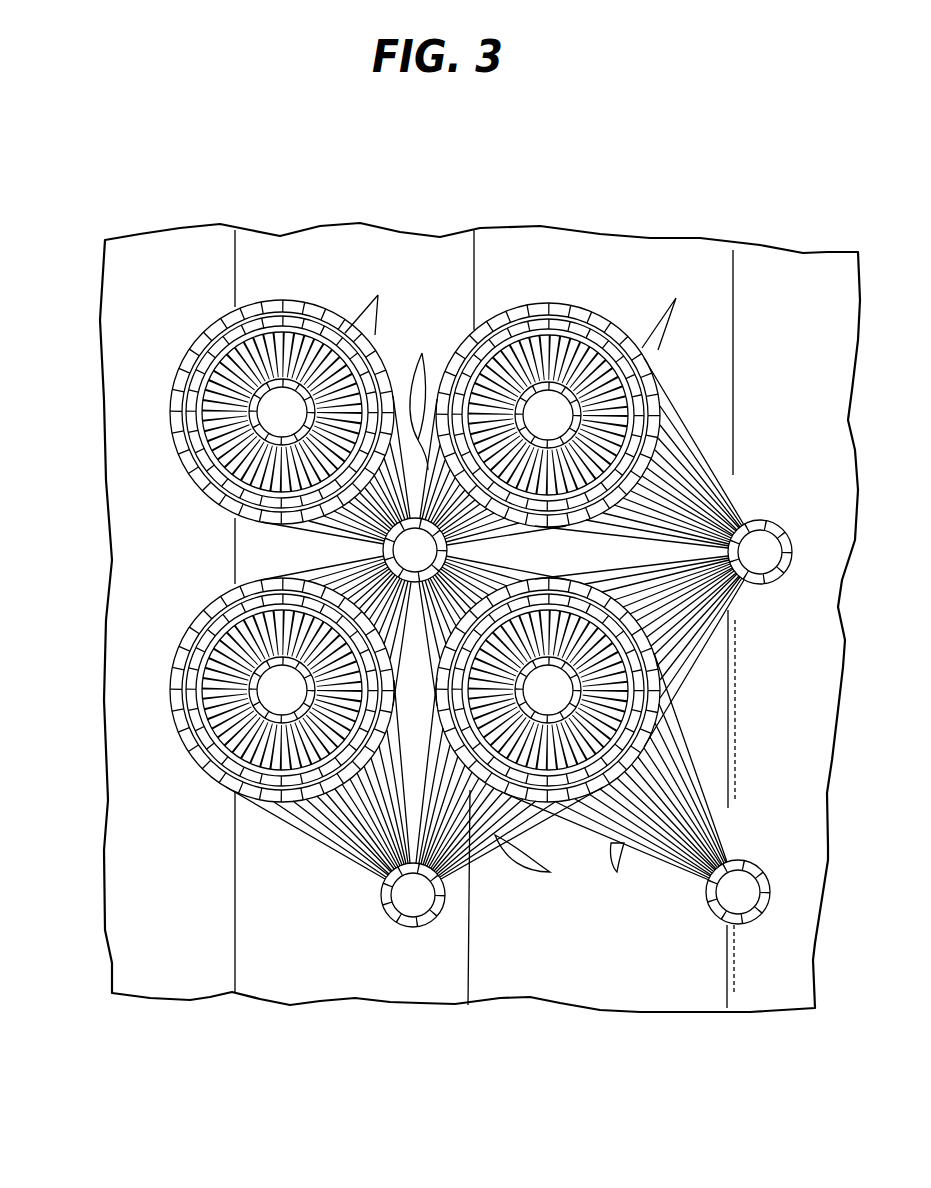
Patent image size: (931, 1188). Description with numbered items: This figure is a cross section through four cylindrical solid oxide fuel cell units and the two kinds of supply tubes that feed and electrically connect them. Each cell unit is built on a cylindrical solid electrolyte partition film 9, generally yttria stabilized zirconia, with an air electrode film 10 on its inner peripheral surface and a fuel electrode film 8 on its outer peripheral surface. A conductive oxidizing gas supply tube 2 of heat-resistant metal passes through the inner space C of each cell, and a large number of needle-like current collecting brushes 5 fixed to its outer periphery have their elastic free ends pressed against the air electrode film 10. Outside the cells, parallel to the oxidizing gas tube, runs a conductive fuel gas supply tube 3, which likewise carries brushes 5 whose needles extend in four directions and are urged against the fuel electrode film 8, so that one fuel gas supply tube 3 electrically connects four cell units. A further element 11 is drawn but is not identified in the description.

The conductive oxidizing gas supply tube 2 is at (386, 490).
The conductive fuel gas supply tube 3 is at (768, 522).
The needle-like current collecting brush 5 is at (522, 584).
The fuel electrode film 8 is at (347, 315).
The solid electrolyte partition film 9 is at (315, 322).
The air electrode film 10 is at (280, 330).
The coil core 11 is at (262, 330).
The inner space C is at (185, 462).